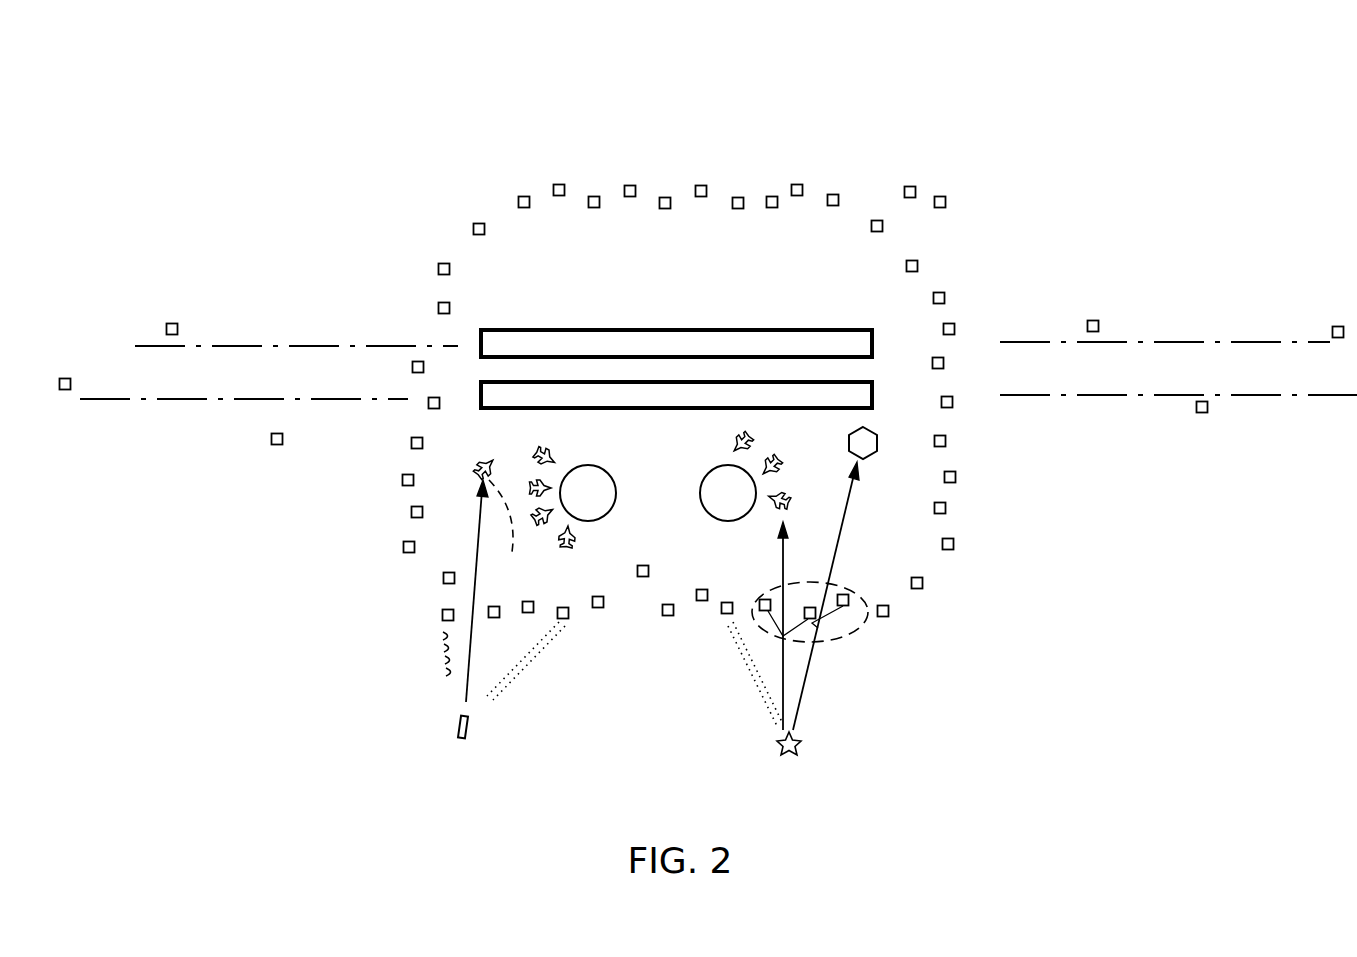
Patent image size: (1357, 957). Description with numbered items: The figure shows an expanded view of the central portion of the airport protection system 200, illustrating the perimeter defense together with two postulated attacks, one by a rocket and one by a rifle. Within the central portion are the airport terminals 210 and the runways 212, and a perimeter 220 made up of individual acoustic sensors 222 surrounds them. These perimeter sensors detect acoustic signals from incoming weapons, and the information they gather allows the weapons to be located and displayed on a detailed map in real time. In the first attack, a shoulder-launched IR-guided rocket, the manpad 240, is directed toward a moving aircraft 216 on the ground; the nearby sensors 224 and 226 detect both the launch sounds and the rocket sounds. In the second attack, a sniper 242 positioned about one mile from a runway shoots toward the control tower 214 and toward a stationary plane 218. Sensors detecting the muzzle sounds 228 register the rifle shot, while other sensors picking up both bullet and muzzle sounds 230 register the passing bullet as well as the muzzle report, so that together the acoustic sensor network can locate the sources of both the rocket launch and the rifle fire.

The airport protection system 200 is at (340, 120).
The airport terminals 210 is at (617, 488).
The runways 212 is at (650, 393).
The control tower 214 is at (873, 455).
The moving aircraft 216 is at (305, 345).
The stationary plane 218 is at (797, 502).
The perimeter 220 is at (845, 178).
The acoustic sensors 222 is at (437, 269).
The sensor 224 is at (442, 614).
The sensor 226 is at (166, 328).
The sensors detecting muzzle sounds 228 is at (722, 614).
The sensors picking up bullet and muzzle sounds 230 is at (858, 630).
The manpad 240 is at (456, 727).
The sniper 242 is at (802, 742).